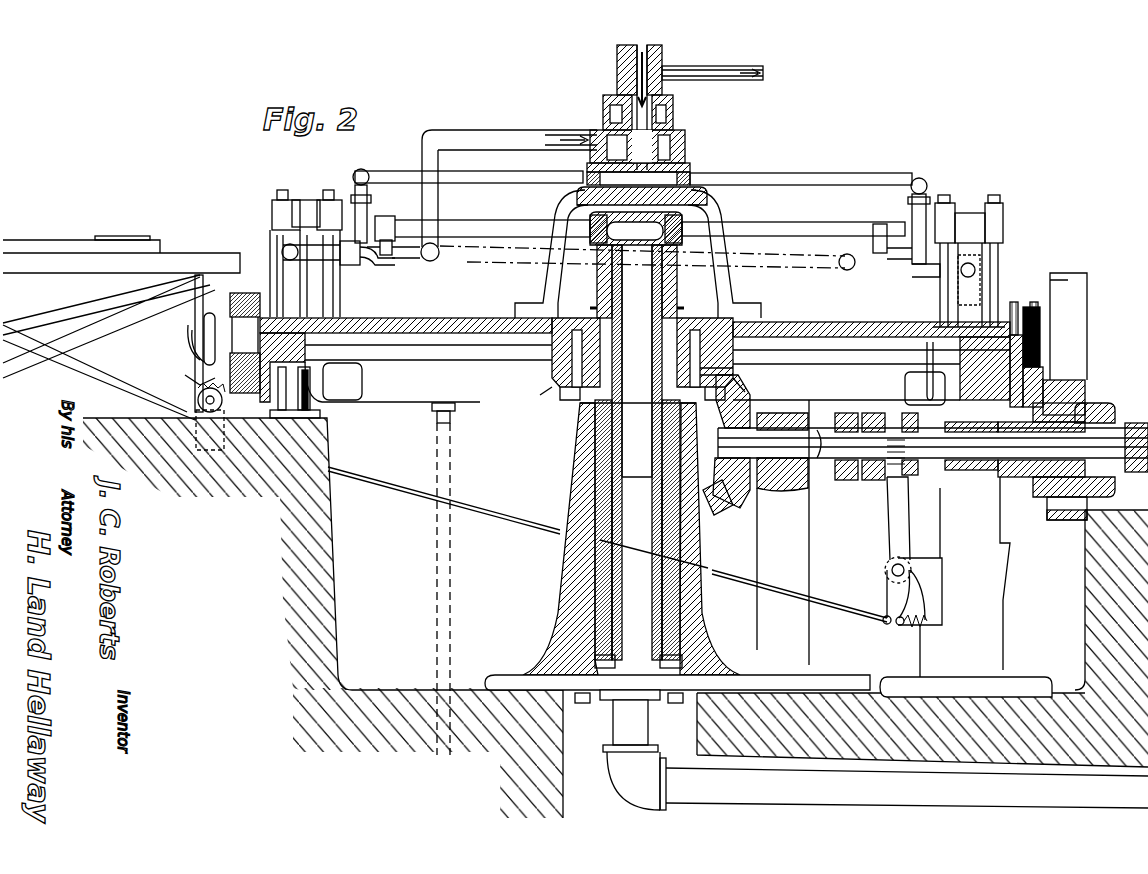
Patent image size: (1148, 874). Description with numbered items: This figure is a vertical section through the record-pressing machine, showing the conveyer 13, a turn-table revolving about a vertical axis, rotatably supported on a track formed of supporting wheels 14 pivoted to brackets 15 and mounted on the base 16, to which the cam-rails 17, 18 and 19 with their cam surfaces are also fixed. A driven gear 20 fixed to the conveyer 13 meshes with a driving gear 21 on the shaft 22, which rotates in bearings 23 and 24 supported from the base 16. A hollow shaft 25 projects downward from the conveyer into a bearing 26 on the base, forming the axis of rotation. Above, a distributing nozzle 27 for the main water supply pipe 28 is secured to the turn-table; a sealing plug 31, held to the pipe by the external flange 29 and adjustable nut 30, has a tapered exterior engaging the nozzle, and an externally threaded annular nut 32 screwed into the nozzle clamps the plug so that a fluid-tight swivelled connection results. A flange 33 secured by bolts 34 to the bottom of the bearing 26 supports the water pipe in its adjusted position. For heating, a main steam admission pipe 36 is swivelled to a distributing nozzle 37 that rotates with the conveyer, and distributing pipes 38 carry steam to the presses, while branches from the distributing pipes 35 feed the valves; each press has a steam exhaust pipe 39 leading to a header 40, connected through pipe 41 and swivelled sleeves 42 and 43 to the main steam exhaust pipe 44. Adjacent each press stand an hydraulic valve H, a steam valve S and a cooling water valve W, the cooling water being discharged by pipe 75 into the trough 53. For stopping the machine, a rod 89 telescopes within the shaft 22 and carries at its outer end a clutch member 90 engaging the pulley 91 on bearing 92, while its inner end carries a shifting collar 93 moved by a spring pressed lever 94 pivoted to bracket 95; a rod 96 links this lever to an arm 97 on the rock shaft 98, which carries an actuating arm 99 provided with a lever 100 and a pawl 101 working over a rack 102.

The conveyer 13 is at (428, 318).
The supporting wheels 14 is at (300, 412).
The brackets 15 is at (282, 412).
The base 16 is at (325, 600).
The cam-rail 17 is at (1055, 380).
The cam-rail 18 is at (1040, 362).
The cam-rail 19 is at (1032, 345).
The driven gear 20 is at (735, 370).
The driving gear 21 is at (735, 410).
The shaft 22 is at (798, 440).
The bearing 23 is at (752, 505).
The bearing 24 is at (975, 472).
The hollow shaft 25 is at (615, 531).
The bearing 26 is at (578, 560).
The distributing nozzle 27 is at (683, 302).
The main water supply pipe 28 is at (592, 432).
The external flange 29 is at (637, 316).
The adjustable nut 30 is at (642, 216).
The sealing plug 31 is at (600, 280).
The annular nut 32 is at (550, 347).
The flange 33 is at (632, 698).
The bolts 34 is at (675, 706).
The distributing pipes 35 is at (506, 226).
The main steam admission pipe 36 is at (645, 125).
The distributing nozzle 37 is at (690, 168).
The distributing pipes 38 is at (476, 183).
The steam exhaust pipe 39 is at (392, 262).
The header 40 is at (468, 252).
The pipe 41 is at (478, 130).
The swivelled sleeve 42 is at (673, 150).
The swivelled sleeve 43 is at (617, 92).
The main steam exhaust pipe 44 is at (775, 77).
The trough 53 is at (380, 395).
The pipe 75 is at (925, 352).
The rod 89 is at (1012, 505).
The clutch member 90 is at (1108, 492).
The pulley 91 is at (1066, 522).
The bearing 92 is at (1090, 405).
The shifting collar 93 is at (872, 482).
The spring pressed lever 94 is at (896, 530).
The bracket 95 is at (925, 580).
The rod 96 is at (853, 620).
The arm 97 is at (185, 410).
The rock shaft 98 is at (200, 395).
The actuating arm 99 is at (208, 315).
The lever 100 is at (195, 325).
The pawl 101 is at (197, 340).
The rack 102 is at (205, 378).
The cooling water valve W is at (295, 244).
The steam valve S is at (312, 244).
The hydraulic valve H is at (975, 258).